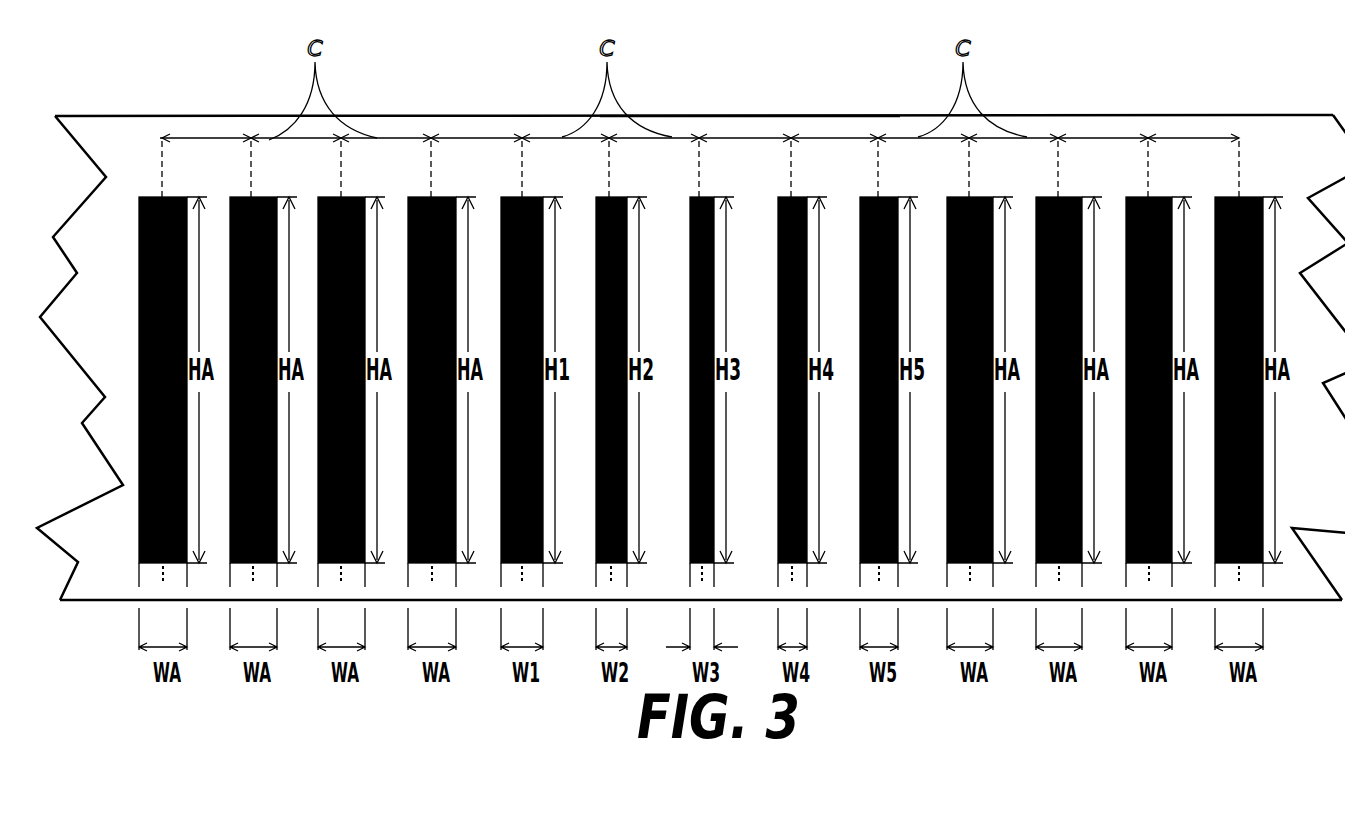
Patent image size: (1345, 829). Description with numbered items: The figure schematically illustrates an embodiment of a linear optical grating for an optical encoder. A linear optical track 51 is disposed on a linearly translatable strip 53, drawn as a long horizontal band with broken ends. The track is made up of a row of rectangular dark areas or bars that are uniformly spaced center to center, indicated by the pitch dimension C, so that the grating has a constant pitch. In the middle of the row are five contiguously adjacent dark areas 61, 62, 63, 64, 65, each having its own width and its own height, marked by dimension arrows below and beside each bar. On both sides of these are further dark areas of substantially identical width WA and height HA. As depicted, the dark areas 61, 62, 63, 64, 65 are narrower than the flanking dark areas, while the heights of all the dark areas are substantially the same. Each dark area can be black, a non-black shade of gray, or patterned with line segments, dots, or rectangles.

The linear optical track 51 is at (1063, 102).
The linearly translatable strip 53 is at (731, 115).
The dark area 61 is at (526, 197).
The dark area 62 is at (612, 197).
The dark area 63 is at (706, 197).
The dark area 64 is at (794, 197).
The dark area 65 is at (884, 197).